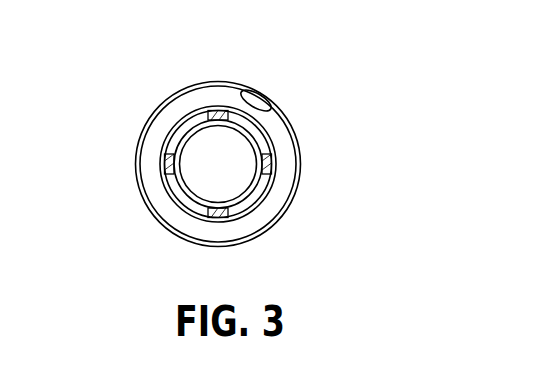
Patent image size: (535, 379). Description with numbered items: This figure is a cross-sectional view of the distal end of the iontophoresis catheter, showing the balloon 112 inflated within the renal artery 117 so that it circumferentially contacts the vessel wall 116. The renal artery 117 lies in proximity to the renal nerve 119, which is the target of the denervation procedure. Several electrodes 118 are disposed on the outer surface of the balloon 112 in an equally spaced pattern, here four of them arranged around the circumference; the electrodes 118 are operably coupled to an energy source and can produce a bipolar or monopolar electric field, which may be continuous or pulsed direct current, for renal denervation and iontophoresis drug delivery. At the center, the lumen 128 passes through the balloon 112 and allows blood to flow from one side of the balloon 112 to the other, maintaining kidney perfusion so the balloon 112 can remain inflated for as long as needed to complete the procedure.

The balloon 112 is at (257, 191).
The vessel wall 116 is at (182, 212).
The renal artery 117 is at (135, 180).
The electrodes 118 is at (217, 110).
The renal nerve 119 is at (255, 99).
The lumen 128 is at (227, 159).